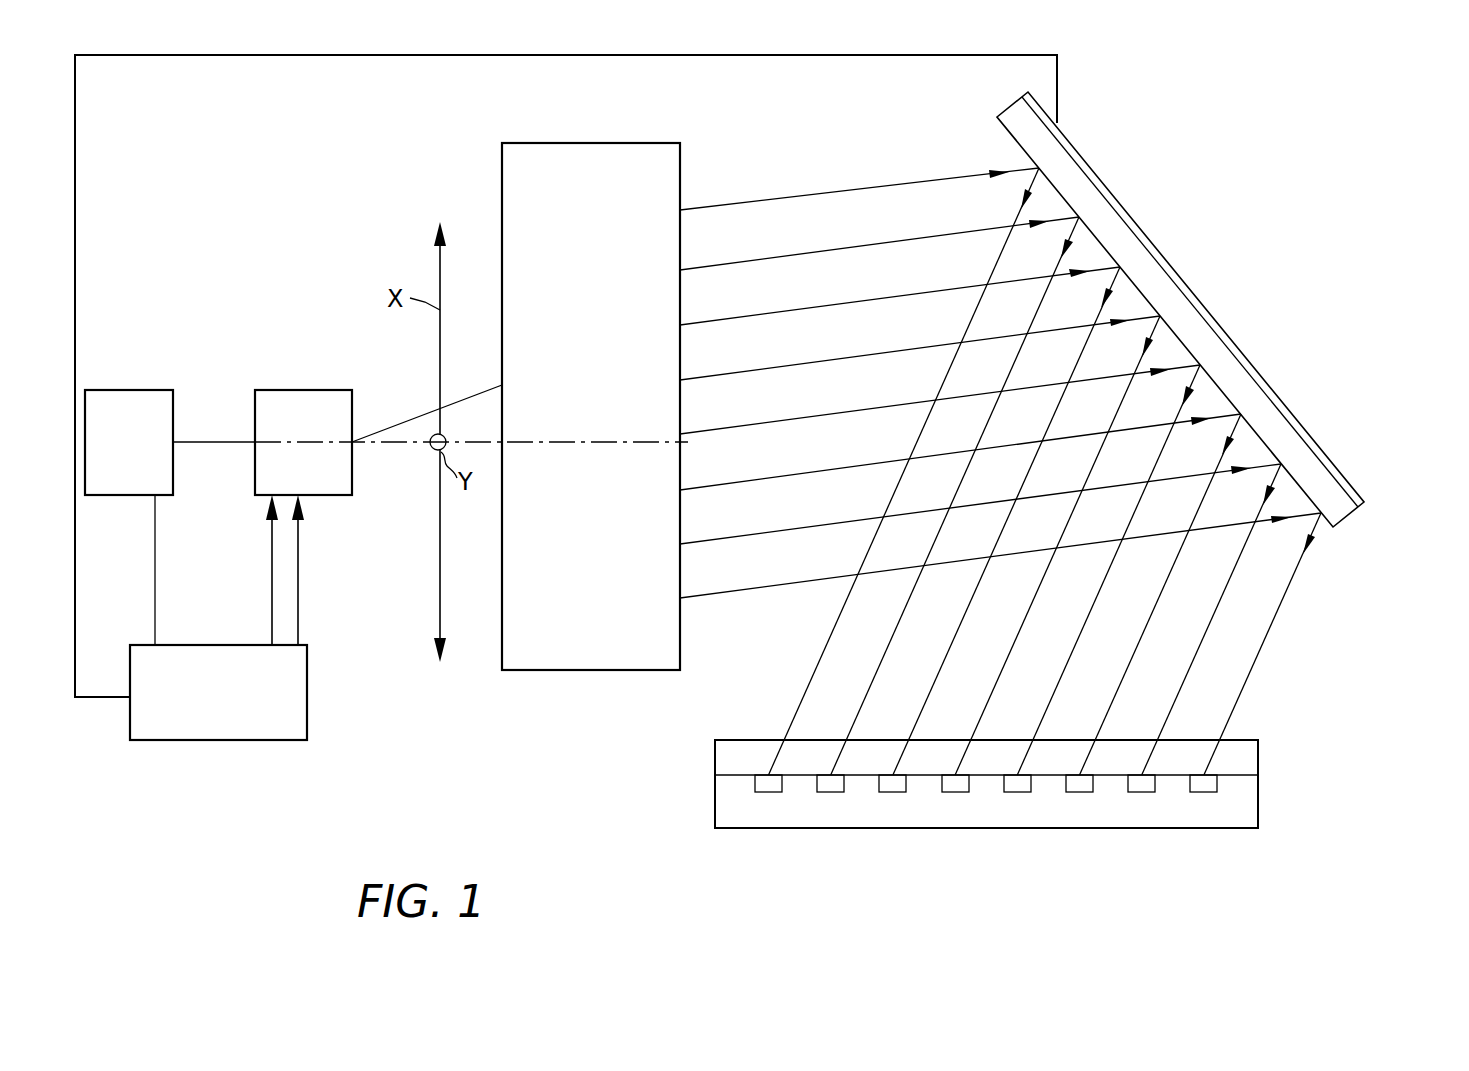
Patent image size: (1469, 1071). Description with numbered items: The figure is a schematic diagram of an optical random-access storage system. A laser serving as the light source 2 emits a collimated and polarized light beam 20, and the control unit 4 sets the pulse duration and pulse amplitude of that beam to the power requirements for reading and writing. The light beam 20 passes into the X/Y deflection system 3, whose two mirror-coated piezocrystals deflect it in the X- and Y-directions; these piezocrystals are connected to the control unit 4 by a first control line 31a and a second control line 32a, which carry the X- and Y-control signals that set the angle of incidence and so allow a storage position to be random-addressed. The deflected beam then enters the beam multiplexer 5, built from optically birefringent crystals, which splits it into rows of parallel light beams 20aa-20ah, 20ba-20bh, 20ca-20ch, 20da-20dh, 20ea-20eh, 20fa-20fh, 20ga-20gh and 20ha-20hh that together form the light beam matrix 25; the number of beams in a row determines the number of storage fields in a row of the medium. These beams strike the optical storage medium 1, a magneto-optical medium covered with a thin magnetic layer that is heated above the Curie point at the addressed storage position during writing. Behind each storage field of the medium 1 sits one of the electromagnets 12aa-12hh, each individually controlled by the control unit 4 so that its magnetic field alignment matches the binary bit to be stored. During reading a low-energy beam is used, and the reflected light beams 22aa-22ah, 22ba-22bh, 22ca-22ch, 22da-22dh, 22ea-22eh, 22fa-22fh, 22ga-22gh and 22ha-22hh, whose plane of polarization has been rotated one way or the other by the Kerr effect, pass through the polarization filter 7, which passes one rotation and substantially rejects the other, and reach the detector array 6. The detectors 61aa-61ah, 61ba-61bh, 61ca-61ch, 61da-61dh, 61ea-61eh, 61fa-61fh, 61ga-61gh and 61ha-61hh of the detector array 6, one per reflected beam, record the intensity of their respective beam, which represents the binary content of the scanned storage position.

The optical storage medium 1 is at (1017, 117).
The light source 2 is at (128, 397).
The X/Y deflection system 3 is at (296, 398).
The control unit 4 is at (232, 727).
The beam multiplexer 5 is at (592, 152).
The detector array 6 is at (720, 798).
The polarization filter 7 is at (1258, 753).
The light beam 20 is at (221, 439).
The light beam matrix 25 is at (722, 140).
The first control line 31a is at (272, 560).
The second control line 32a is at (298, 560).
The electromagnets 12aa-12hh is at (1080, 148).
The parallel light beams 20aa-20ah is at (730, 202).
The parallel light beams 20ba-20bh is at (730, 258).
The parallel light beams 20ca-20ch is at (733, 317).
The parallel light beams 20da-20dh is at (733, 368).
The parallel light beams 20ea-20eh is at (733, 427).
The parallel light beams 20fa-20fh is at (733, 480).
The parallel light beams 20ga-20gh is at (721, 533).
The parallel light beams 20ha-20hh is at (696, 590).
The reflected light beams 22aa-22ah is at (1017, 213).
The reflected light beams 22ba-22bh is at (1058, 262).
The reflected light beams 22ca-22ch is at (1100, 310).
The reflected light beams 22da-22dh is at (1140, 358).
The reflected light beams 22ea-22eh is at (1183, 405).
The reflected light beams 22fa-22fh is at (1220, 457).
The reflected light beams 22ga-22gh is at (1243, 540).
The reflected light beams 22ha-22hh is at (1277, 607).
The detectors 61aa-61ah is at (770, 792).
The detectors 61ba-61bh is at (830, 792).
The detectors 61ca-61ch is at (962, 855).
The detectors 61da-61dh is at (955, 792).
The detectors 61ea-61eh is at (1012, 792).
The detectors 61fa-61fh is at (1083, 792).
The detectors 61ga-61gh is at (1145, 792).
The detectors 61ha-61hh is at (1205, 792).